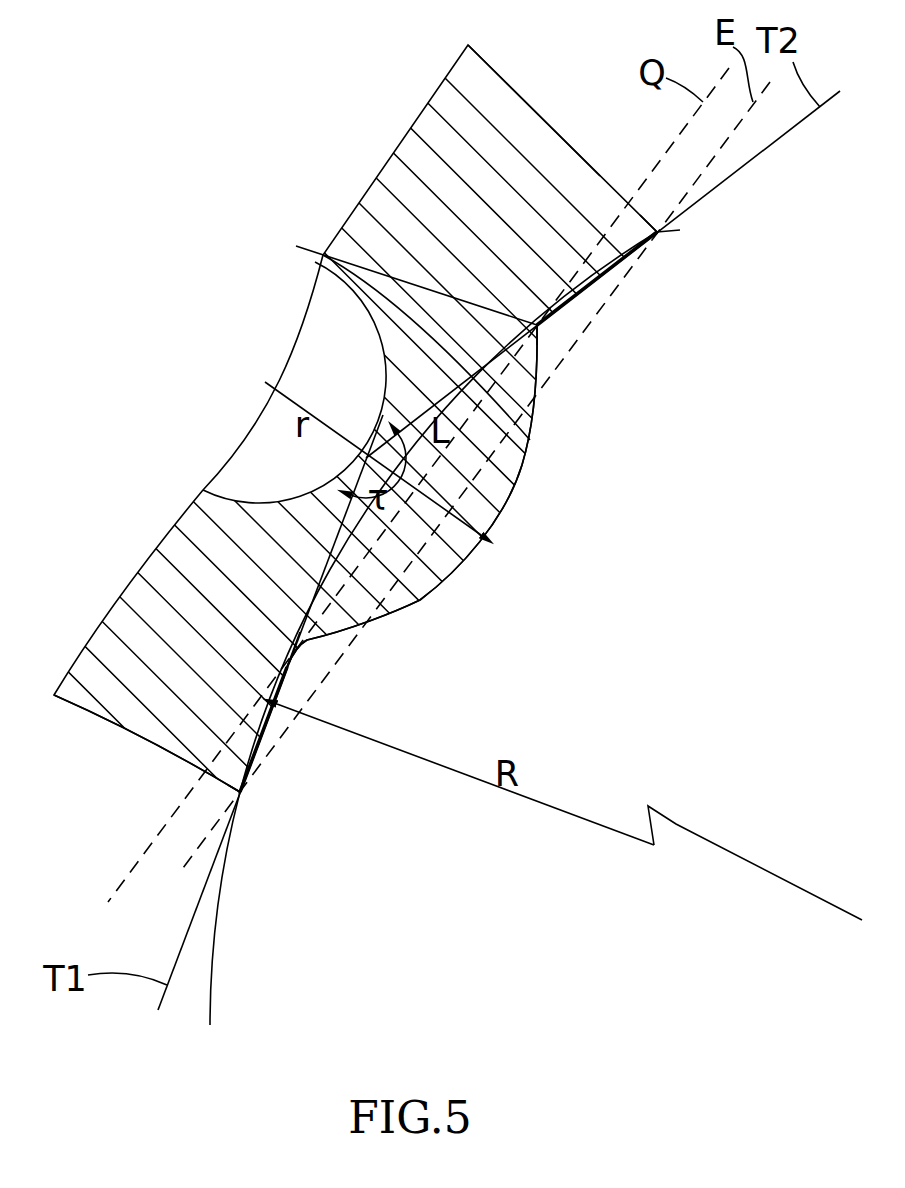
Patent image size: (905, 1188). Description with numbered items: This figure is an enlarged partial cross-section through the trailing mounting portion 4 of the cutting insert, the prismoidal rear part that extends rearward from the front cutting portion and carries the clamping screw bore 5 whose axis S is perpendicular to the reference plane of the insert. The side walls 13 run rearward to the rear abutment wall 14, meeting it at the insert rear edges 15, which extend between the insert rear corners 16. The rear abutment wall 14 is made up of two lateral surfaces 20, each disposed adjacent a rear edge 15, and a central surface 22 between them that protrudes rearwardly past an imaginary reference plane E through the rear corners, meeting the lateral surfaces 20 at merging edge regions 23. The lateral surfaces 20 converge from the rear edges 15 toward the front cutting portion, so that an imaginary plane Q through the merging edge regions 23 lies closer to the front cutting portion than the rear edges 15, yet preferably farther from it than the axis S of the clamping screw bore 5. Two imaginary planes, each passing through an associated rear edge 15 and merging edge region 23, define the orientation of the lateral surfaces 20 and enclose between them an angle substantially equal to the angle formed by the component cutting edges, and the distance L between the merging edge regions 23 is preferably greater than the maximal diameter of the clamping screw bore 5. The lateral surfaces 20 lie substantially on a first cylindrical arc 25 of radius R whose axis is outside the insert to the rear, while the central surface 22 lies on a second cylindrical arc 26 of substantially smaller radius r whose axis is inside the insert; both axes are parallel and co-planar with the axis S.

The trailing mounting portion 4 is at (434, 168).
The clamping screw bore 5 is at (343, 390).
The side wall 13 is at (502, 82).
The rear abutment wall 14 is at (535, 442).
The insert rear edge 15 is at (674, 240).
The insert rear corner 16 is at (663, 233).
The lateral surface 20 is at (590, 284).
The central surface 22 is at (445, 590).
The merging edge region 23 is at (545, 328).
The first cylindrical arc 25 is at (212, 1022).
The second cylindrical arc 26 is at (393, 332).